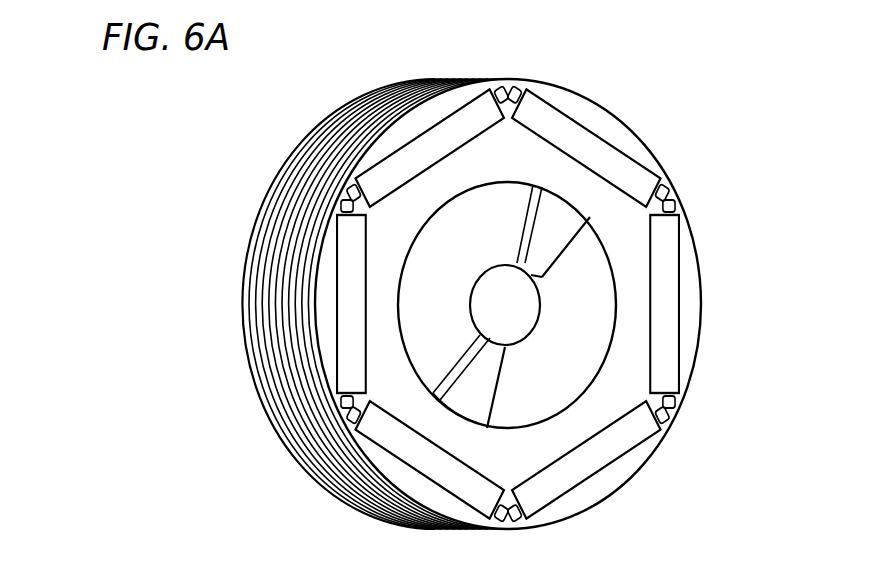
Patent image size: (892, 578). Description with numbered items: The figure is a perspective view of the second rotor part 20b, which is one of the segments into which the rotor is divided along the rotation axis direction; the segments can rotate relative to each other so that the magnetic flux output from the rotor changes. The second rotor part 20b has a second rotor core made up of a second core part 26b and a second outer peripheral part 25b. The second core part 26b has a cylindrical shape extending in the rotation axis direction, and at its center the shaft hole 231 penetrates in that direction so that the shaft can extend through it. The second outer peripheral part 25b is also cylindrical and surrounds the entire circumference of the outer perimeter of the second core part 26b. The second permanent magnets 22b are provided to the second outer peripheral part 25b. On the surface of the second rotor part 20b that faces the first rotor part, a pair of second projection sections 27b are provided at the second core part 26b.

The second rotor part 20b is at (615, 115).
The second outer peripheral part 25b is at (393, 222).
The second permanent magnets 22b is at (670, 292).
The second core part 26b is at (490, 197).
The second projection sections 27b is at (545, 230).
The shaft hole 231 is at (523, 320).